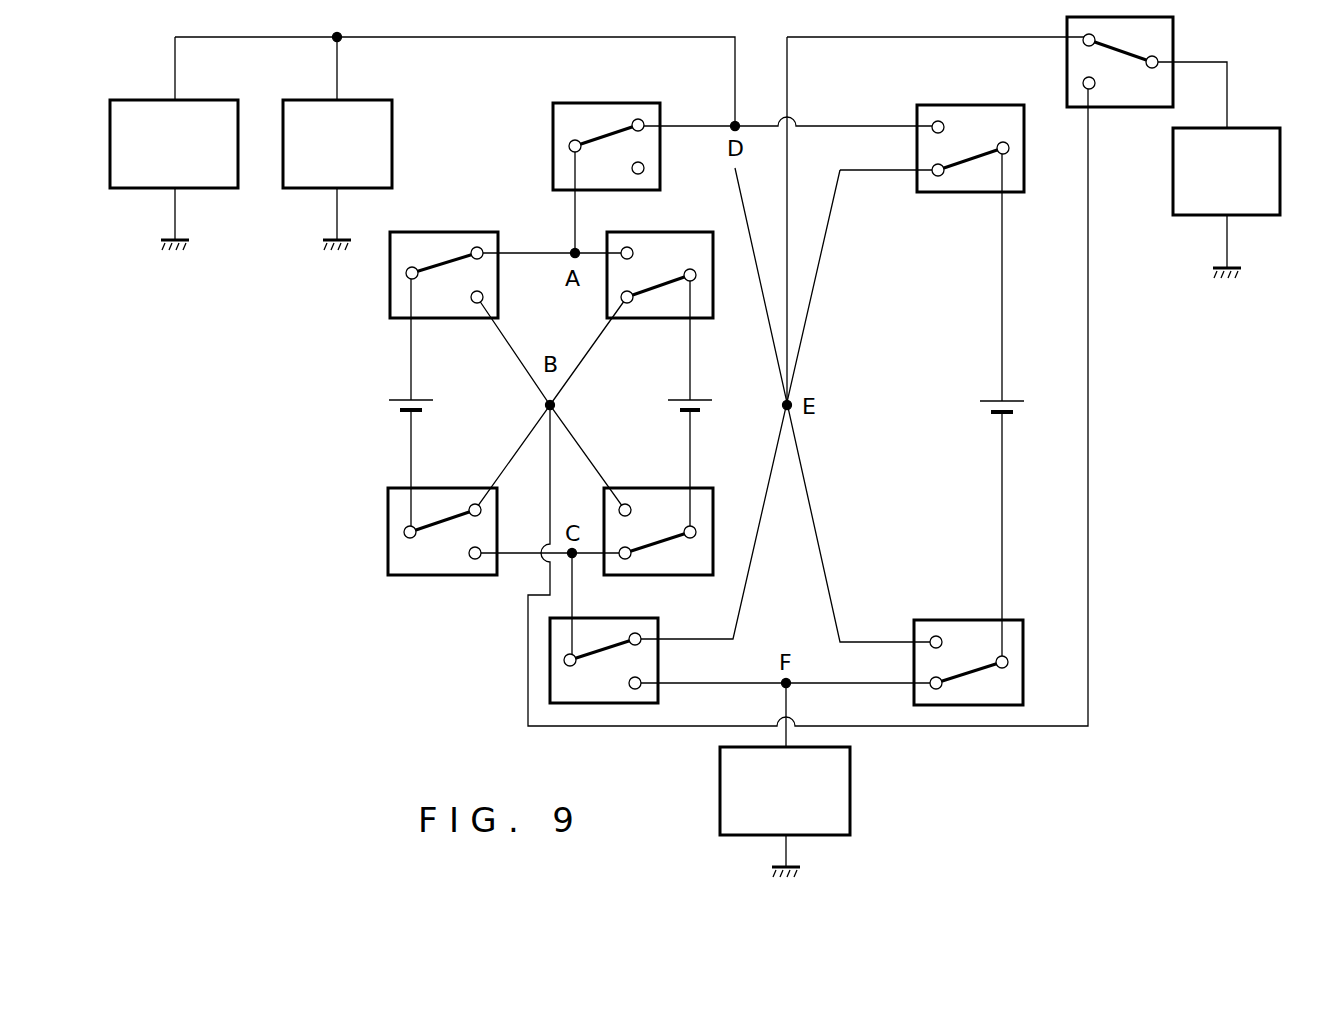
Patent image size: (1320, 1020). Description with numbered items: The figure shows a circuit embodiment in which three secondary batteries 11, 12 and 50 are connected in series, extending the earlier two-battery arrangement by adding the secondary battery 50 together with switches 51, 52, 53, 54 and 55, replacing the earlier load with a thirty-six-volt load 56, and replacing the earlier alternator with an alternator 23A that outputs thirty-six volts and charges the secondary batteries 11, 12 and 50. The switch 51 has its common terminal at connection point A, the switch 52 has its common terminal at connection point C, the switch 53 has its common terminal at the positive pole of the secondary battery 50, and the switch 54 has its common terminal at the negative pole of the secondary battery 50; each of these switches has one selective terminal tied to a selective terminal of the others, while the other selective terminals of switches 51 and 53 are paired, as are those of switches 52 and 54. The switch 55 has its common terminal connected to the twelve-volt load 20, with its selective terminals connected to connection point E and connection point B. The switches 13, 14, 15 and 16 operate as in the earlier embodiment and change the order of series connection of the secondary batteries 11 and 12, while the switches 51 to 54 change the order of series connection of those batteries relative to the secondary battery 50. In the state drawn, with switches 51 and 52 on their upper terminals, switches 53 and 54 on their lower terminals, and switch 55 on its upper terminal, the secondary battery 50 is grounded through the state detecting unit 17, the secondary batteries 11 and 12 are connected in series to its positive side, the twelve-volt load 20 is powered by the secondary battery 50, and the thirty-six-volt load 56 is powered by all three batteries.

The alternator 23A is at (195, 100).
The 36V-load 56 is at (350, 100).
The 12V-load 20 is at (1238, 128).
The state detecting unit 17 is at (850, 775).
The switch 51 is at (602, 103).
The switch 52 is at (600, 618).
The switch 53 is at (960, 105).
The switch 54 is at (920, 620).
The switch 55 is at (1175, 30).
The switch 13 is at (422, 232).
The switch 14 is at (443, 488).
The switch 15 is at (685, 232).
The switch 16 is at (698, 488).
The secondary battery 11 is at (422, 398).
The secondary battery 12 is at (700, 400).
The secondary battery 50 is at (1008, 401).